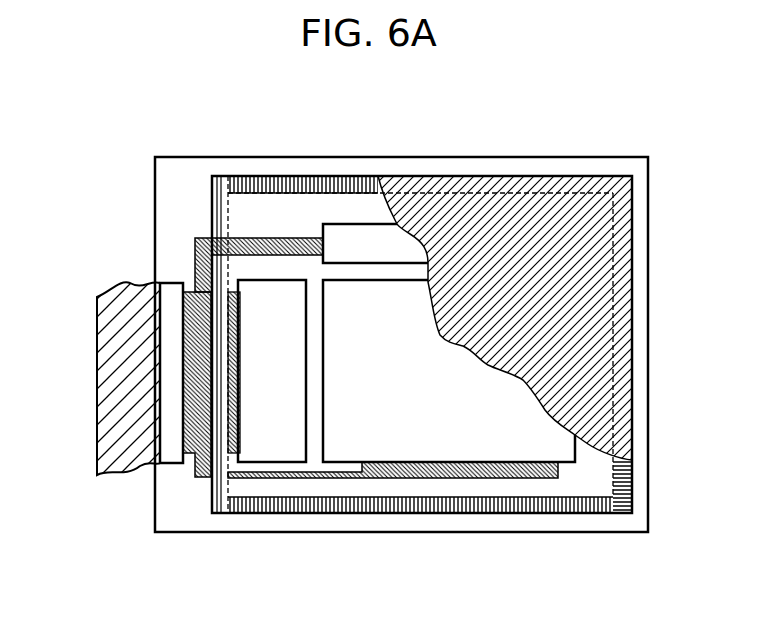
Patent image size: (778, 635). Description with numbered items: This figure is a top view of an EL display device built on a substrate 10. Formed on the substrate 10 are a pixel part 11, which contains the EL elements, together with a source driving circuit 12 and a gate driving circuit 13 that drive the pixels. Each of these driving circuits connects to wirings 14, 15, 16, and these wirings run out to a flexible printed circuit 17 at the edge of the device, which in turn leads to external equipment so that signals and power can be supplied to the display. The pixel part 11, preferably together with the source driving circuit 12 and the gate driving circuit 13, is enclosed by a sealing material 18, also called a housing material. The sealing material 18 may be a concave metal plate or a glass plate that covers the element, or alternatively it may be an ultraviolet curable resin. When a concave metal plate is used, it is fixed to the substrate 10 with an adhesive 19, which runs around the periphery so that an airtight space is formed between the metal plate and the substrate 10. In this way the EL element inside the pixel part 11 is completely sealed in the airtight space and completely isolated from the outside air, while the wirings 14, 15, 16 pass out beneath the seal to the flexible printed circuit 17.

The substrate 10 is at (173, 172).
The pixel part 11 is at (362, 448).
The source driving circuit 12 is at (279, 451).
The gate driving circuit 13 is at (360, 259).
The wiring 14 is at (192, 292).
The wiring 15 is at (263, 238).
The wiring 16 is at (377, 478).
The flexible printed circuit 17 is at (83, 275).
The sealing material 18 is at (433, 343).
The adhesive 19 is at (495, 513).